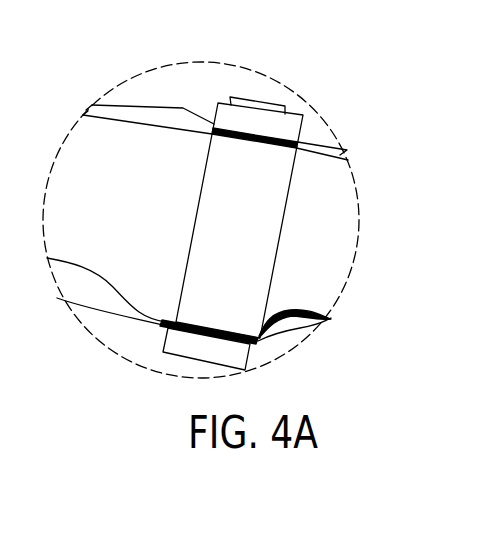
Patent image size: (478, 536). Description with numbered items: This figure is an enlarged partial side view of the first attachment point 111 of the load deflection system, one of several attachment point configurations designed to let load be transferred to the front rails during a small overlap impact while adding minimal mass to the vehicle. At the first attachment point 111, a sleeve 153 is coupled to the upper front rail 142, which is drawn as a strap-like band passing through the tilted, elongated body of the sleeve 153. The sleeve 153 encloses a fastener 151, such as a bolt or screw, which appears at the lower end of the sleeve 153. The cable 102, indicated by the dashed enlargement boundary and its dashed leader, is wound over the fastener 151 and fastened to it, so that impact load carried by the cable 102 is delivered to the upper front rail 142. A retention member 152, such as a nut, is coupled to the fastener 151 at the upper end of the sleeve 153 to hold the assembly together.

The first attachment point 111 is at (407, 126).
The cable 102 is at (256, 347).
The upper front rail 142 is at (140, 292).
The fastener 151 is at (198, 343).
The retention member 152 is at (285, 125).
The sleeve 153 is at (263, 222).